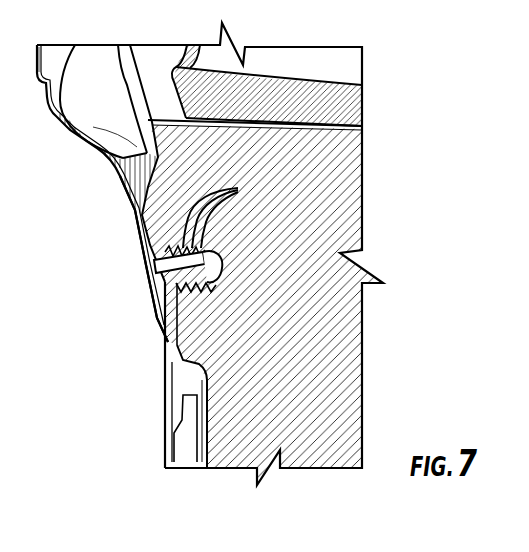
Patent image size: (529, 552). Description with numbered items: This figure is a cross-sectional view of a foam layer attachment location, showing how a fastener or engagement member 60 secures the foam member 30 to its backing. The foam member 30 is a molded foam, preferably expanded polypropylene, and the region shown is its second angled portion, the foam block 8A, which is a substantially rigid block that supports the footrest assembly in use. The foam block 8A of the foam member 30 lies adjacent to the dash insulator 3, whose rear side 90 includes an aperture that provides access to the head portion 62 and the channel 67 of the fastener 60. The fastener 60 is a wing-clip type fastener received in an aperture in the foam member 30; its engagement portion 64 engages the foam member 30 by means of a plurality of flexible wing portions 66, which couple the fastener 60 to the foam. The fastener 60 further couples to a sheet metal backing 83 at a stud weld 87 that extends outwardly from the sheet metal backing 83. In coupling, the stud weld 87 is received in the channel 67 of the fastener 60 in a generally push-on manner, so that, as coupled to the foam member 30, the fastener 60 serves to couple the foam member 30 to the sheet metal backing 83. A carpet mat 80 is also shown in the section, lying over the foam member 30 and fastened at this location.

The dash insulator 3 is at (131, 178).
The foam member 30 is at (302, 208).
The carpet mat 80 is at (332, 104).
The head portion 62 is at (137, 246).
The flexible wings 66 is at (246, 183).
The fastener 60 is at (141, 271).
The engagement portion 64 is at (220, 280).
The channel 67 is at (163, 328).
The stud weld 87 is at (175, 277).
The rear side of the dash insulator 90 is at (175, 372).
The sheet metal backing 83 is at (134, 298).
The foam block 8A is at (290, 376).